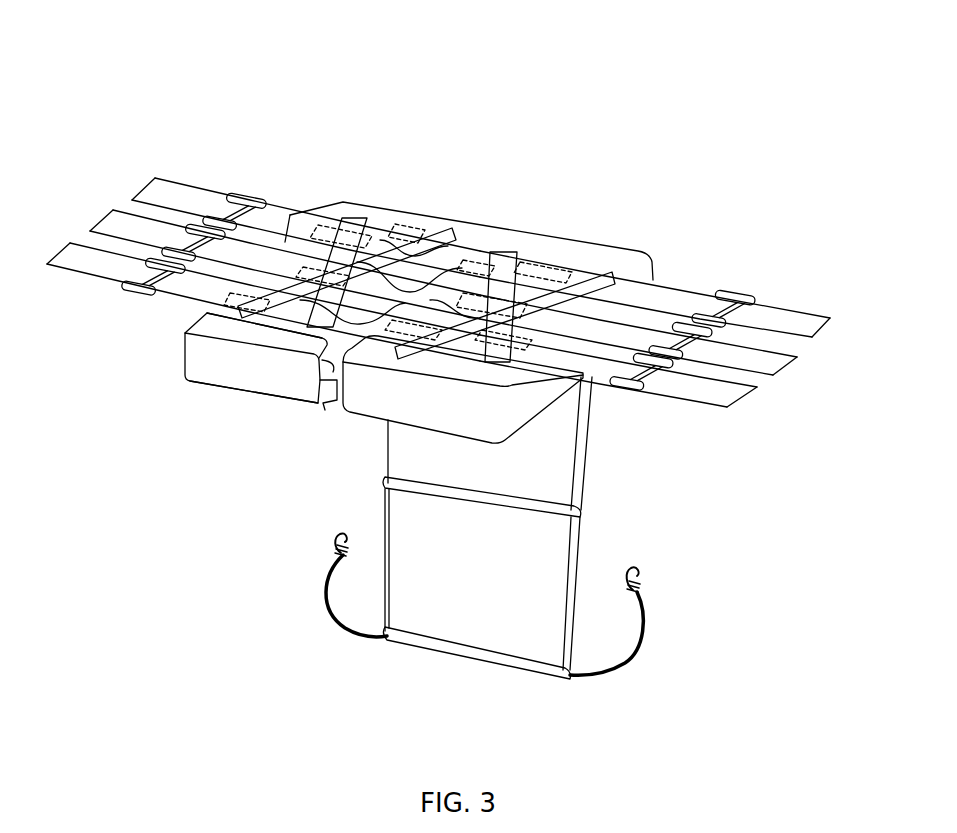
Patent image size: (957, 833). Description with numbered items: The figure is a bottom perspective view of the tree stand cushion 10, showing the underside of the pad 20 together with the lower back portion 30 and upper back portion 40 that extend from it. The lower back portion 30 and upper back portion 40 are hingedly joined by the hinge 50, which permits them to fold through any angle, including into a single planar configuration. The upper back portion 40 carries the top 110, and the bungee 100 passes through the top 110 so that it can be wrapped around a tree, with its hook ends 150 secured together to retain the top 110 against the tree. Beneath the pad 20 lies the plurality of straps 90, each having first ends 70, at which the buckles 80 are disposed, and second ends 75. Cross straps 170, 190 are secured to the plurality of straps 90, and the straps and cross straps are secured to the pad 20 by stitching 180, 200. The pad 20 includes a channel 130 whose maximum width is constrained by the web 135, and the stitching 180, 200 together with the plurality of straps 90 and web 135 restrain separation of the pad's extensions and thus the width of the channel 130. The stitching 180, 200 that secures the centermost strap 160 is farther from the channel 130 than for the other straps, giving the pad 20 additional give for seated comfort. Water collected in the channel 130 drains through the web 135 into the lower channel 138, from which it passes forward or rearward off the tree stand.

The tree stand cushion 10 is at (703, 545).
The pad 20 is at (195, 378).
The lower back portion 30 is at (413, 448).
The upper back portion 40 is at (443, 588).
The hinge 50 is at (533, 510).
The first ends 70 is at (197, 202).
The second ends 75 is at (777, 315).
The buckles 80 is at (247, 200).
The plurality of straps 90 is at (830, 318).
The bungee 100 is at (647, 605).
The top 110 is at (537, 667).
The channel 130 is at (337, 407).
The web 135 is at (318, 398).
The lower channel 138 is at (230, 323).
The hook ends 150 is at (627, 563).
The centermost strap 160 is at (340, 283).
The cross straps 170 is at (298, 292).
The stitching 180 is at (370, 262).
The cross straps 190 is at (500, 287).
The stitching 200 is at (530, 290).